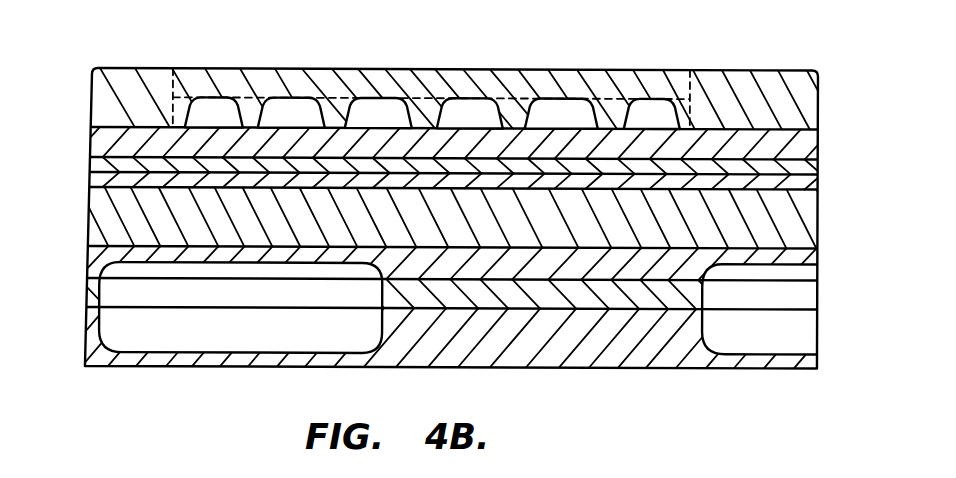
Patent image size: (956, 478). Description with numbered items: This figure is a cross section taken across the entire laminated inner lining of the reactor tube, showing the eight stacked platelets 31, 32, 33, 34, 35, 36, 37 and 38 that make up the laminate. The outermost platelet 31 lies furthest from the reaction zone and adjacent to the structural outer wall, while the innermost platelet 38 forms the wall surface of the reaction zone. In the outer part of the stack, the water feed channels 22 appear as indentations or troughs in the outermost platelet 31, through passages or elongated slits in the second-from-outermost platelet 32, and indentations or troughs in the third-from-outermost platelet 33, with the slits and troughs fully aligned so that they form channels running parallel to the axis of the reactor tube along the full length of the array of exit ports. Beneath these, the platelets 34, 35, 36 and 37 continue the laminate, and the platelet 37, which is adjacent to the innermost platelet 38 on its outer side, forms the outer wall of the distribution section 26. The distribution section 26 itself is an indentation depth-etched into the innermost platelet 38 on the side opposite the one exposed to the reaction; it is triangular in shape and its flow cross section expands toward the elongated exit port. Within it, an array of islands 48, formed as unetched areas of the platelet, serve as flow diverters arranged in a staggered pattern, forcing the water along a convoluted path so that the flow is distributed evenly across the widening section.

The water feed channel 22 is at (217, 335).
The distribution section 26 is at (482, 113).
The island 48 is at (340, 120).
The outermost platelet 31 is at (92, 100).
The second-from-outermost platelet 32 is at (92, 128).
The third-from-outermost platelet 33 is at (88, 163).
The platelet 34 is at (89, 194).
The platelet 35 is at (90, 237).
The platelet 36 is at (88, 272).
The platelet 37 is at (87, 301).
The innermost platelet 38 is at (85, 349).